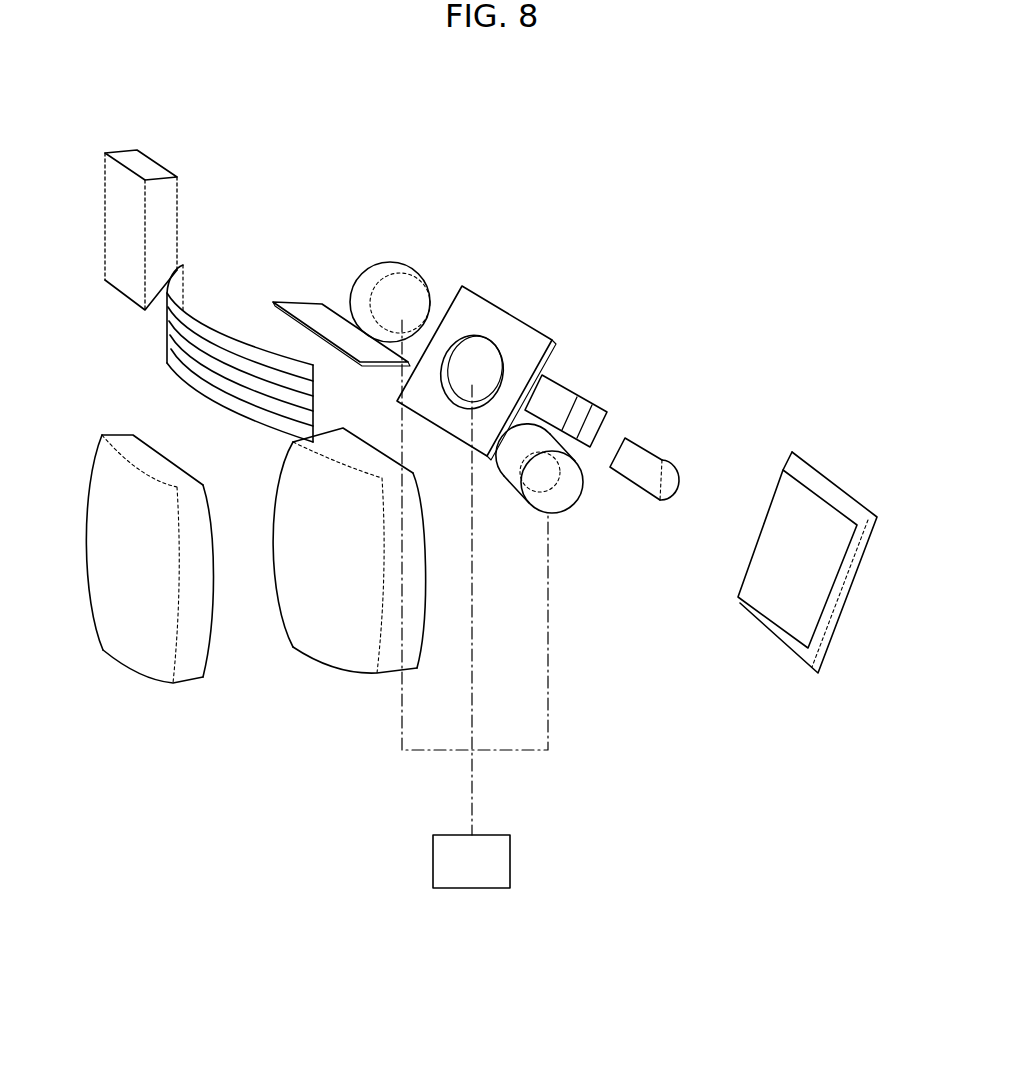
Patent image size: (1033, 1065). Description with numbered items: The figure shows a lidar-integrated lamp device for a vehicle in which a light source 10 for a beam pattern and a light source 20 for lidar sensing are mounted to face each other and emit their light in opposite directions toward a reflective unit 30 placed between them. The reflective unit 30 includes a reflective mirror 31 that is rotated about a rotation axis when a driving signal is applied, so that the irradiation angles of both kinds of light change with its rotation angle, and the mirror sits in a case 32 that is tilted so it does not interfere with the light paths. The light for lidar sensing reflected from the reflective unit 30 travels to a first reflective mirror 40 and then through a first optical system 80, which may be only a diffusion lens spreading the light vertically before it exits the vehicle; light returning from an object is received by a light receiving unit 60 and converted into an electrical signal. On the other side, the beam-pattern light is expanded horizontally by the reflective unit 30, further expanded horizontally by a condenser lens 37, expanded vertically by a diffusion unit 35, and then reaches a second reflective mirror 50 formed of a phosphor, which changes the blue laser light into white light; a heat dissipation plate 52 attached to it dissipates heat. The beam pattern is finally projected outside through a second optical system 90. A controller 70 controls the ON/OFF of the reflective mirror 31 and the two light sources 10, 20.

The light source for a beam pattern 10 is at (383, 267).
The light source for lidar sensing 20 is at (560, 495).
The reflective unit 30 is at (530, 322).
The reflective mirror 31 is at (478, 352).
The case 32 is at (527, 337).
The diffusion unit 35 is at (647, 460).
The condenser lens 37 is at (558, 393).
The first reflective mirror 40 is at (310, 310).
The second reflective mirror 50 is at (798, 503).
The heat dissipation plate 52 is at (840, 488).
The light receiving unit 60 is at (130, 160).
The controller 70 is at (510, 861).
The first optical system 80 is at (177, 343).
The second optical system 90 is at (318, 650).